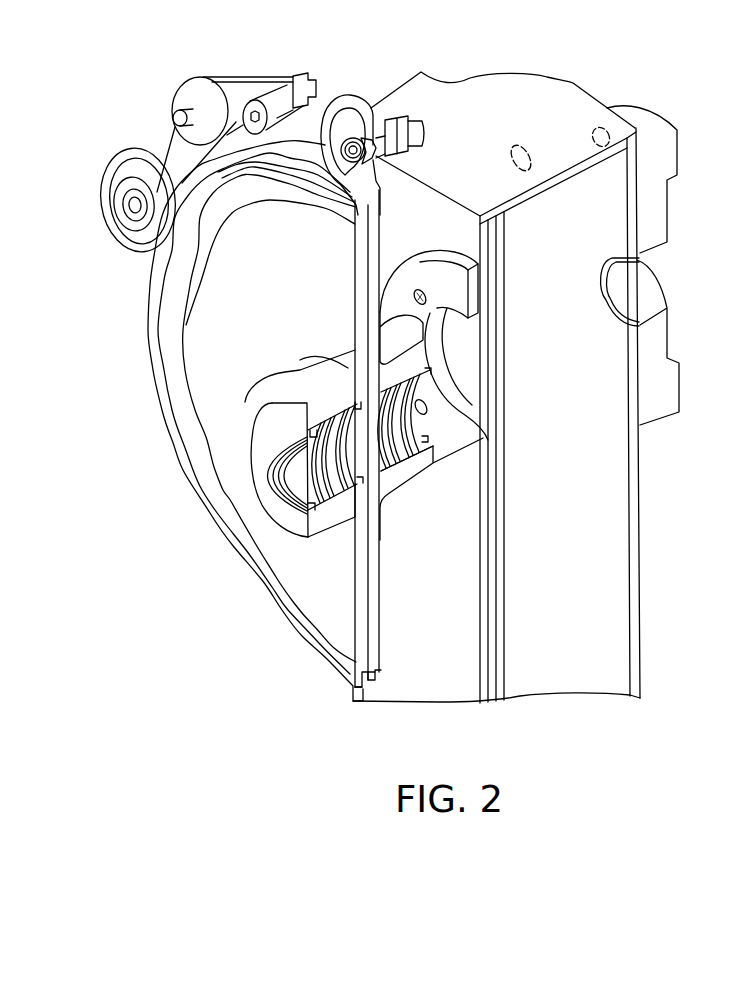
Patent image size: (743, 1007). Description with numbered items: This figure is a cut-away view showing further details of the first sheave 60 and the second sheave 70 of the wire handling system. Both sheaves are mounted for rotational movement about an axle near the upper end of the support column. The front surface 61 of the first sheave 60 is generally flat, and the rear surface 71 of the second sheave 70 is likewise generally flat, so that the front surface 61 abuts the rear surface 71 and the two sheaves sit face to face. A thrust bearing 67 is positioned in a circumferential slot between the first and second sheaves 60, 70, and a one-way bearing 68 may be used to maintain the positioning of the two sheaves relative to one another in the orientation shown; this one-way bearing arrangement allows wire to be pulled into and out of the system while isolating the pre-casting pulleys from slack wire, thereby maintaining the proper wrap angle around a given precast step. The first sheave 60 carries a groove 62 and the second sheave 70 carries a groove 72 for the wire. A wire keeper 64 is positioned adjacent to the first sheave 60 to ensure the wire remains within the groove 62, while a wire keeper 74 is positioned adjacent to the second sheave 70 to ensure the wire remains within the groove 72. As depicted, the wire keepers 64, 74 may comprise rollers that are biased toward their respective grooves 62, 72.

The first sheave 60 is at (407, 483).
The front surface 61 is at (328, 702).
The groove 62 is at (378, 680).
The wire keeper 64 is at (356, 94).
The thrust bearing 67 is at (360, 488).
The one-way bearing 68 is at (373, 423).
The second sheave 70 is at (323, 528).
The rear surface 71 is at (329, 700).
The groove 72 is at (360, 683).
The wire keeper 74 is at (121, 141).